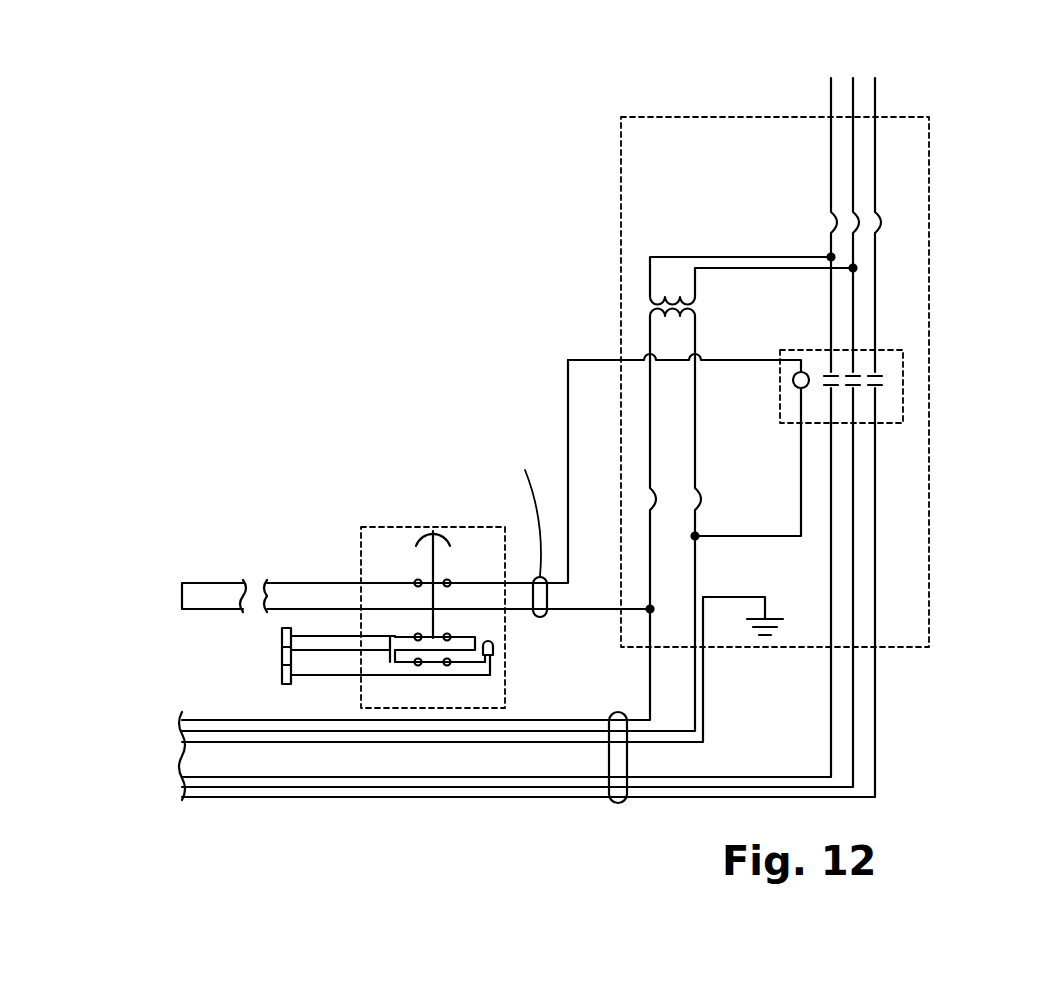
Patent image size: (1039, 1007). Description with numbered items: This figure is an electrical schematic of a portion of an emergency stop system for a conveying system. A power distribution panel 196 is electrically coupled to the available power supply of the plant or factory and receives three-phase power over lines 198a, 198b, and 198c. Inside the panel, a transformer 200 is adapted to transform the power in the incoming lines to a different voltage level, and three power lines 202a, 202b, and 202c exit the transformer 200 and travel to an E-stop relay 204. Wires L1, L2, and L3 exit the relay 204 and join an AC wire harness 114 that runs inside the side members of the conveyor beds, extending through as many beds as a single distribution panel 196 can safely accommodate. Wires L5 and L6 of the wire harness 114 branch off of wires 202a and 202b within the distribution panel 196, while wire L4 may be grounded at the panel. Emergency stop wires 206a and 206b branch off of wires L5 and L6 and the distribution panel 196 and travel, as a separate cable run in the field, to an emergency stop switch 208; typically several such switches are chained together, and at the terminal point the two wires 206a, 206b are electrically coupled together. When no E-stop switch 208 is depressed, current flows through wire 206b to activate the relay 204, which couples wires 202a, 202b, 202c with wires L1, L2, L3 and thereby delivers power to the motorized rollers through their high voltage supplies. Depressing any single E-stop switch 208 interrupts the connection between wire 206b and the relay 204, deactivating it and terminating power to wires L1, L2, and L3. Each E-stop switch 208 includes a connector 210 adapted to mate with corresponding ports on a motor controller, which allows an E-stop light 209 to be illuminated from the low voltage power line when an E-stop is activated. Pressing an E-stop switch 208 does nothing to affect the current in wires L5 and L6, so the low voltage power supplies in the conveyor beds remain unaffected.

The AC wire harness 114 is at (615, 805).
The power distribution panel 196 is at (620, 165).
The power line 198a is at (831, 100).
The power line 198b is at (853, 95).
The power line 198c is at (875, 100).
The transformer 200 is at (650, 308).
The power line 202a is at (831, 318).
The power line 202b is at (853, 303).
The power line 202c is at (875, 332).
The relay 204 is at (903, 400).
The emergency stop wire 206a is at (588, 608).
The emergency stop wire 206b is at (590, 360).
The emergency stop switch 208 is at (400, 508).
The E-stop light 209 is at (495, 648).
The connector 210 is at (282, 688).
The wire L1 is at (831, 715).
The wire L2 is at (853, 747).
The wire L3 is at (875, 773).
The wire L4 is at (703, 675).
The wire L5 is at (648, 680).
The wire L6 is at (695, 712).